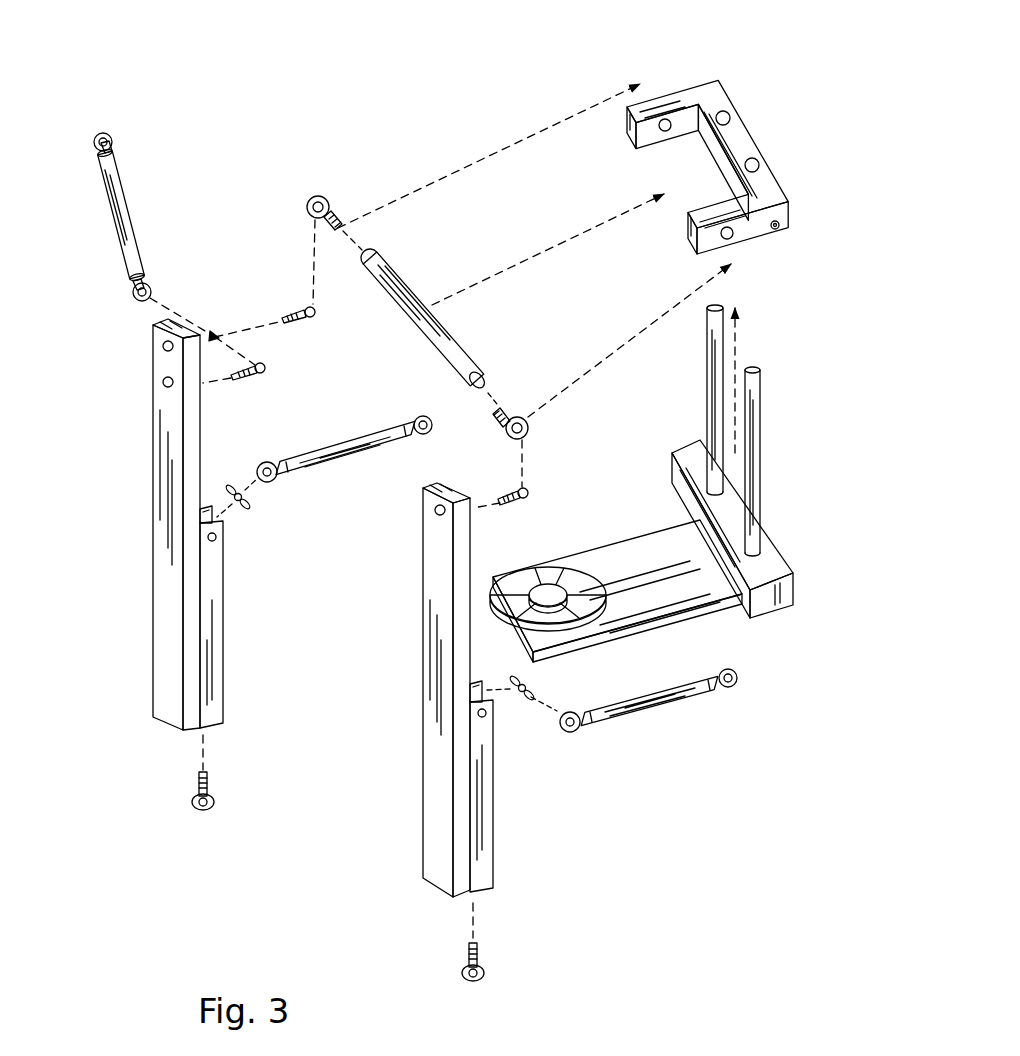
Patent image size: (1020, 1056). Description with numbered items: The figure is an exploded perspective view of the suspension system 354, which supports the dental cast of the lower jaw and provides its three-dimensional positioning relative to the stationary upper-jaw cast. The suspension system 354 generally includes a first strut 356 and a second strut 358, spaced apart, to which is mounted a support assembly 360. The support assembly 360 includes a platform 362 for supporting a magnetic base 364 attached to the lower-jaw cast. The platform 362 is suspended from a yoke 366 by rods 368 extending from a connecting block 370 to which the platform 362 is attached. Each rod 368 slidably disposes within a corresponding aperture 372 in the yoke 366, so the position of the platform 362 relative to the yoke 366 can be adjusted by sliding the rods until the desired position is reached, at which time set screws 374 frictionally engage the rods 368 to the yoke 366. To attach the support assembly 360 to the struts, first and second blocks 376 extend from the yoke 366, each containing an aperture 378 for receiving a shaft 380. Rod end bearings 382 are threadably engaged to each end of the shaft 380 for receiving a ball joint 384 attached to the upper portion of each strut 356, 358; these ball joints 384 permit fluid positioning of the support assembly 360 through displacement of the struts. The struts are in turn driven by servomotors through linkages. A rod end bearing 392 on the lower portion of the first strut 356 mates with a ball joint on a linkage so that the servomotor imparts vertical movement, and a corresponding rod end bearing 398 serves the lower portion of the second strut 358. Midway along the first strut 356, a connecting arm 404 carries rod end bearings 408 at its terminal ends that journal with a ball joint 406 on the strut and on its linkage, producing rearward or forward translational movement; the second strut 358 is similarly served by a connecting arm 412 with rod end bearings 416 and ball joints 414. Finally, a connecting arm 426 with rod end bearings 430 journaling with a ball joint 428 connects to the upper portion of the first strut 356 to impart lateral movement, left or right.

The suspension system 354 is at (248, 96).
The first strut 356 is at (153, 650).
The second strut 358 is at (423, 810).
The support assembly 360 is at (849, 400).
The platform 362 is at (636, 625).
The magnetic base 364 is at (551, 574).
The yoke 366 is at (758, 144).
The rods 368 is at (706, 358).
The connecting block 370 is at (796, 590).
The aperture 372 is at (730, 112).
The set screws 374 is at (780, 226).
The first and second blocks 376 is at (628, 136).
The aperture 378 is at (667, 131).
The shaft 380 is at (480, 360).
The rod end bearings 382 is at (312, 200).
The ball joint 384 is at (306, 306).
The rod end bearing 392 is at (213, 806).
The rod end bearing 398 is at (485, 971).
The connecting arm 404 is at (368, 447).
The ball joint 406 is at (248, 500).
The rod end bearings 408 is at (417, 418).
The connecting arm 412 is at (658, 692).
The ball joints 414 is at (517, 697).
The rod end bearings 416 is at (728, 690).
The connecting arm 426 is at (115, 221).
The ball joint 428 is at (268, 366).
The rod end bearings 430 is at (133, 293).